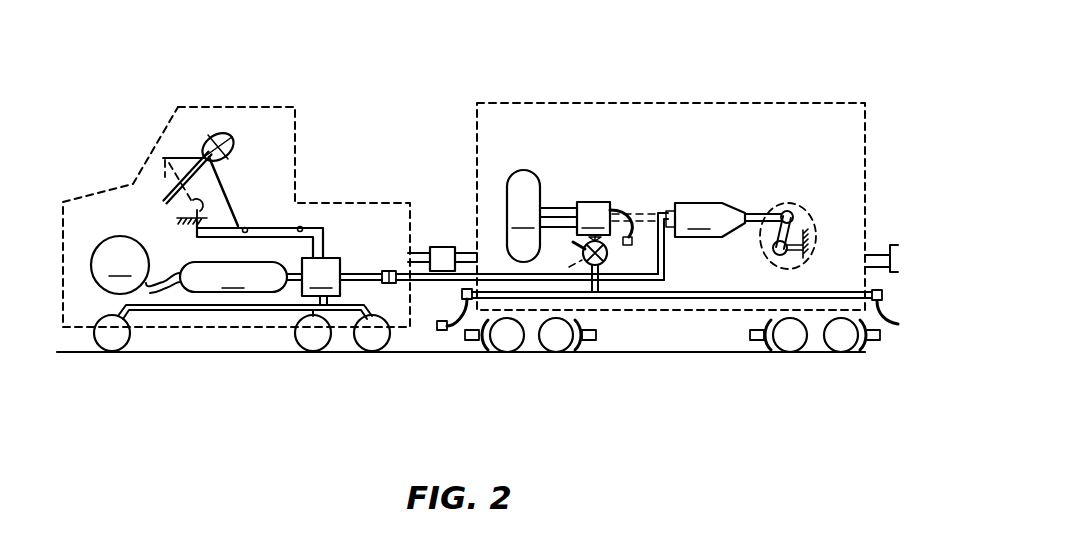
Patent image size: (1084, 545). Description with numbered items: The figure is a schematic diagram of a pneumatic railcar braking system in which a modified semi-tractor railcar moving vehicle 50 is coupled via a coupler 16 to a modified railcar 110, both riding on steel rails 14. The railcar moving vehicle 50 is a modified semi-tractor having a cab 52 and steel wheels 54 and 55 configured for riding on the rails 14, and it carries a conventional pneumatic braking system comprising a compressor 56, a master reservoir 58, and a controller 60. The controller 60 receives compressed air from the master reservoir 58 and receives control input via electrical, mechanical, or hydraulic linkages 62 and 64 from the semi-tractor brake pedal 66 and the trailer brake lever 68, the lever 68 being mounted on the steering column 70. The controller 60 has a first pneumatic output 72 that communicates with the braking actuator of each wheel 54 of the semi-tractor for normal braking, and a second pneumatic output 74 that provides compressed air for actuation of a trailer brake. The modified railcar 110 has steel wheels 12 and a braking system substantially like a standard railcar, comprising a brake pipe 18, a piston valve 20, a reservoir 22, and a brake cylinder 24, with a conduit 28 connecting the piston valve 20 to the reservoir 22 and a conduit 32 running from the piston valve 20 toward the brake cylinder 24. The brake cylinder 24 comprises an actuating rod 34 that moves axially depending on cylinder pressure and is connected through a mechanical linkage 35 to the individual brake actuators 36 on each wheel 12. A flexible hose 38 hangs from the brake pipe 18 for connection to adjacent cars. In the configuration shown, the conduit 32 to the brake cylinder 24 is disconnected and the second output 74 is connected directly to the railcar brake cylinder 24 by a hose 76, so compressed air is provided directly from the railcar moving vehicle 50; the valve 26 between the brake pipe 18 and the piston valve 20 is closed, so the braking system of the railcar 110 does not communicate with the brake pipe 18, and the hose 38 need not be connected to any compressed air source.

The steel wheels 12 is at (674, 335).
The steel rails 14 is at (222, 353).
The coupler 16 is at (441, 247).
The brake pipe 18 is at (710, 292).
The piston valve 20 is at (593, 218).
The reservoir 22 is at (523, 216).
The brake cylinder 24 is at (705, 220).
The valve 26 is at (608, 251).
The conduit 28 is at (557, 207).
The conduit 32 is at (630, 211).
The actuating rod 34 is at (758, 213).
The mechanical linkage 35 is at (812, 212).
The brake actuators 36 is at (485, 343).
The flexible hoses 38 is at (453, 331).
The railcar moving vehicle 50 is at (246, 95).
The cab 52 is at (270, 130).
The steel wheels 54 is at (113, 342).
The steel wheels 55 is at (372, 338).
The compressor 56 is at (135, 265).
The master reservoir 58 is at (241, 277).
The controller 60 is at (321, 277).
The linkage 62 is at (247, 229).
The linkage 64 is at (301, 227).
The brake pedal 66 is at (195, 202).
The trailer brake lever 68 is at (185, 157).
The steering column 70 is at (152, 176).
The first pneumatic output 72 is at (330, 302).
The second pneumatic output 74 is at (355, 272).
The hose 76 is at (667, 253).
The modified railcar 110 is at (654, 102).